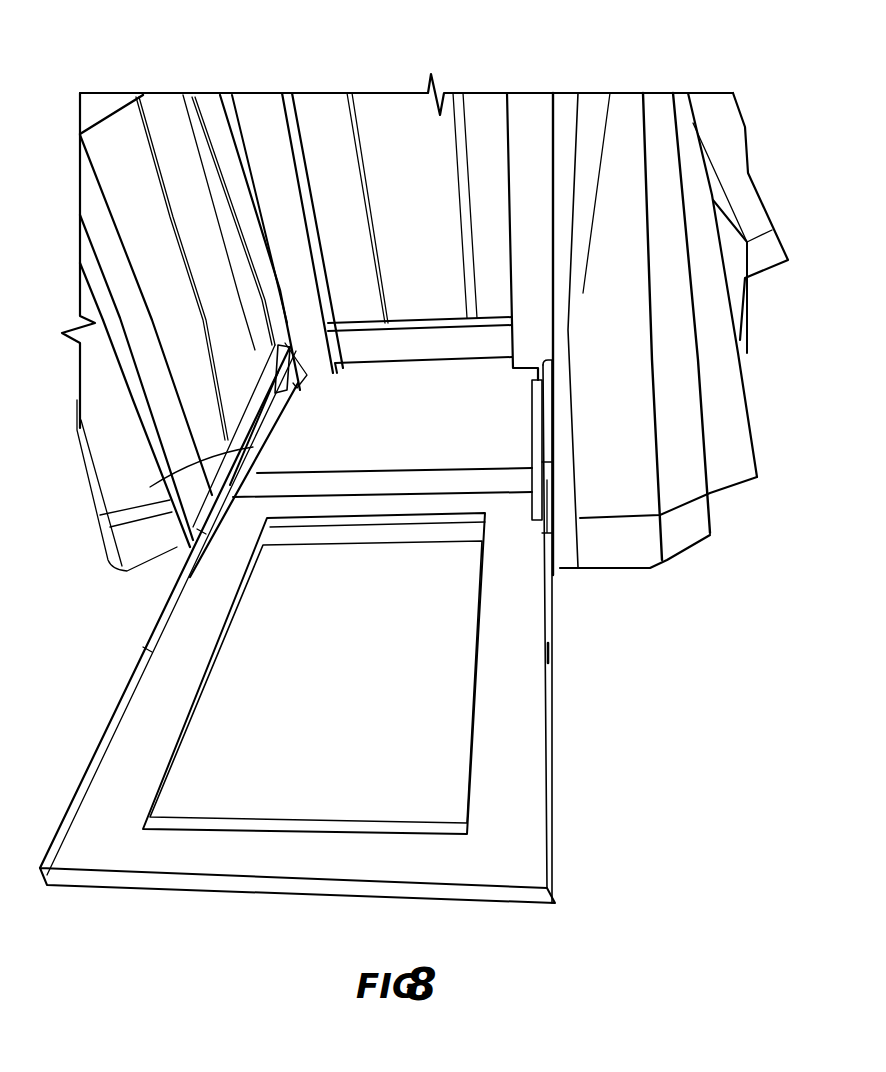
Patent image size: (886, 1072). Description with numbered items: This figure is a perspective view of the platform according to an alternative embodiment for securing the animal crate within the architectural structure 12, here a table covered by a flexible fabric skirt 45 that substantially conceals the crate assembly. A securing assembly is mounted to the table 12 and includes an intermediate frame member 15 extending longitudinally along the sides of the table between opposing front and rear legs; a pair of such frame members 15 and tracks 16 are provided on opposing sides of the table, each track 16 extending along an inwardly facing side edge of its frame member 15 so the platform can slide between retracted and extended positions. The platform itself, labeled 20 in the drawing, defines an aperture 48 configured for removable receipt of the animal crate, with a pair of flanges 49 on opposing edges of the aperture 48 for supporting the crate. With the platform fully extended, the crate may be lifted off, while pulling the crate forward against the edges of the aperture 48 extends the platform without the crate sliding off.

The architectural structure 12 is at (273, 113).
The skirt 45 is at (397, 123).
The intermediate frame member 15 is at (243, 423).
The track 16 is at (175, 542).
The platform 20 is at (553, 762).
The flanges 49 is at (452, 532).
The aperture 48 is at (300, 745).